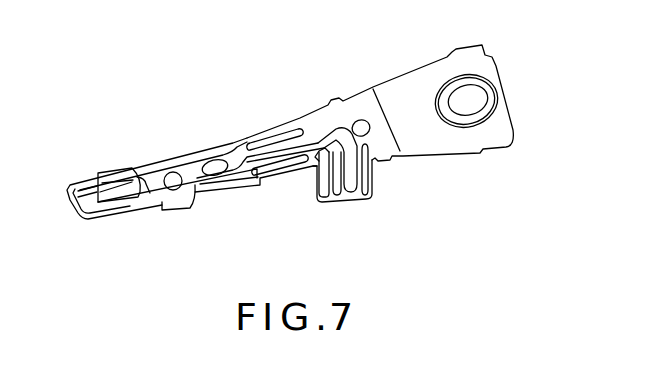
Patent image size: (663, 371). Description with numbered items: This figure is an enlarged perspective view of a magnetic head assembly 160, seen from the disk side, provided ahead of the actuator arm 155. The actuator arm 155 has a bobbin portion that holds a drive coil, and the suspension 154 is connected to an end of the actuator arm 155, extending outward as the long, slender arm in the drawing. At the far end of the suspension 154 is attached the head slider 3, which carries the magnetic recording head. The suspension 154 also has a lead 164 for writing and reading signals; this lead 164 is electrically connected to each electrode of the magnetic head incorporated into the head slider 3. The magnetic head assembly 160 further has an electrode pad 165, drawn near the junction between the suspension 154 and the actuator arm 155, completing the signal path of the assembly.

The magnetic head assembly 160 is at (186, 72).
The suspension 154 is at (233, 143).
The actuator arm 155 is at (450, 136).
The head slider 3 is at (107, 172).
The lead 164 is at (191, 209).
The electrode pad 165 is at (353, 196).